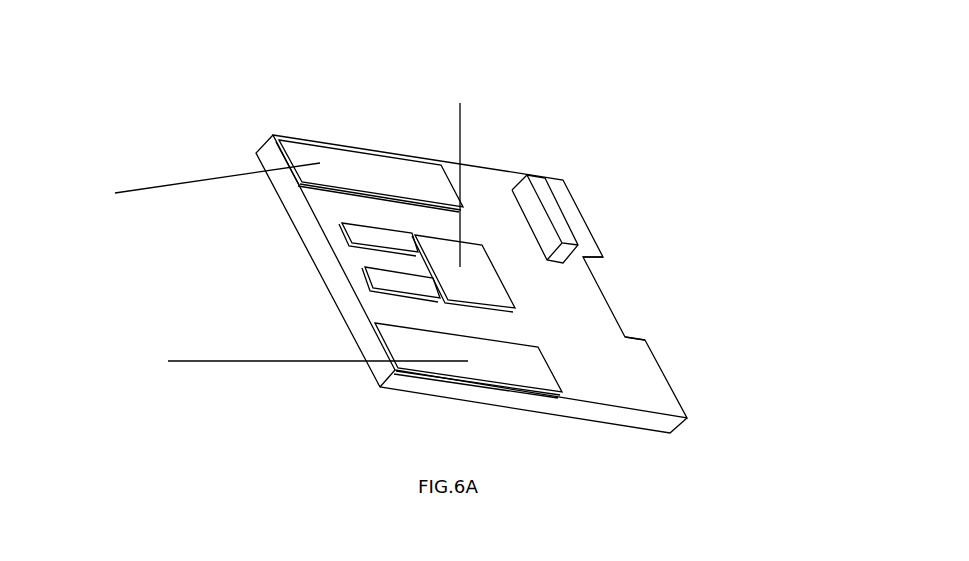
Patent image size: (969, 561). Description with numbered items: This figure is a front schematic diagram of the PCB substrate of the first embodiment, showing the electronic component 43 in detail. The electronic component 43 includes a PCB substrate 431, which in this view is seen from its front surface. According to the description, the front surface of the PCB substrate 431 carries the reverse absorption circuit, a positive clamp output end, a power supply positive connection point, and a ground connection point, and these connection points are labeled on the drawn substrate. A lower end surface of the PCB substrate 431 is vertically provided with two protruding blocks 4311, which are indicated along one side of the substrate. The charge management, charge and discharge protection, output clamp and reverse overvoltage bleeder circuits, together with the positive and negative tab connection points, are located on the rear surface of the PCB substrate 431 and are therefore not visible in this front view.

The electronic component 43 is at (607, 378).
The PCB substrate 431 is at (512, 253).
The protruding blocks 4311 is at (580, 218).